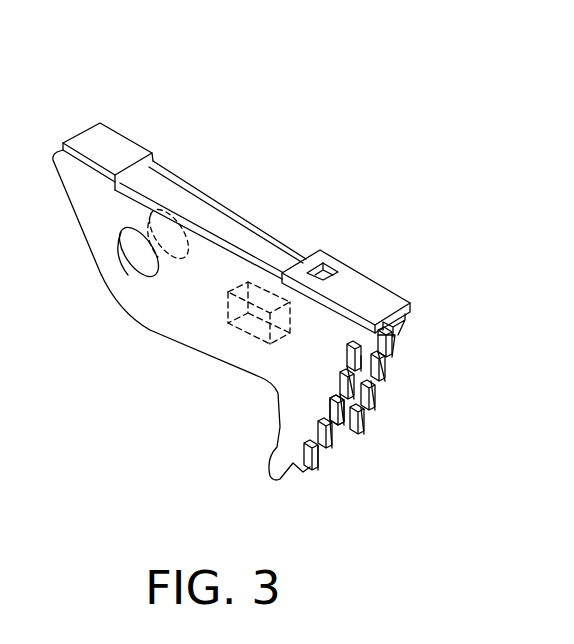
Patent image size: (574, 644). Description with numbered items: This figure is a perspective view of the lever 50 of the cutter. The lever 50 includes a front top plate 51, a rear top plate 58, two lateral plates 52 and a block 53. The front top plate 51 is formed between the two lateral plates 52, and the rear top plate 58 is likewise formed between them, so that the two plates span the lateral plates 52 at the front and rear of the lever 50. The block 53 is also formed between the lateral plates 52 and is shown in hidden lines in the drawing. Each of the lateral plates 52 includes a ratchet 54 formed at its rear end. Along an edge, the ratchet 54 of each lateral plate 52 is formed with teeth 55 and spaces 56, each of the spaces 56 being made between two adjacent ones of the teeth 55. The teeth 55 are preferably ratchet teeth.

The lever 50 is at (242, 122).
The front top plate 51 is at (105, 147).
The lateral plates 52 is at (217, 267).
The block 53 is at (228, 323).
The ratchet 54 is at (285, 440).
The teeth 55 is at (340, 401).
The spaces 56 is at (356, 415).
The rear top plate 58 is at (352, 290).